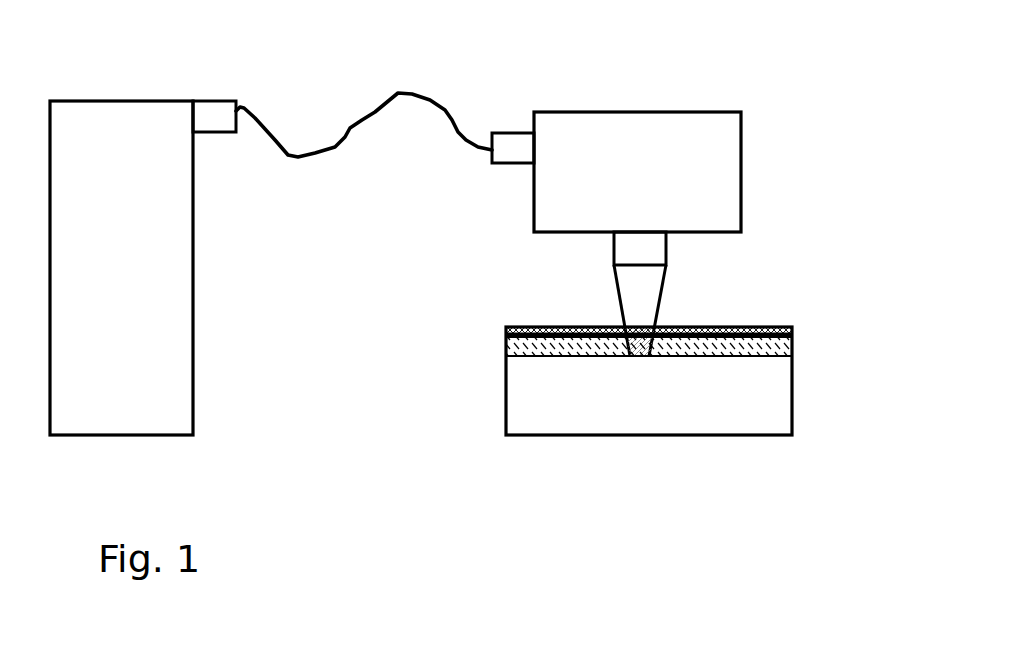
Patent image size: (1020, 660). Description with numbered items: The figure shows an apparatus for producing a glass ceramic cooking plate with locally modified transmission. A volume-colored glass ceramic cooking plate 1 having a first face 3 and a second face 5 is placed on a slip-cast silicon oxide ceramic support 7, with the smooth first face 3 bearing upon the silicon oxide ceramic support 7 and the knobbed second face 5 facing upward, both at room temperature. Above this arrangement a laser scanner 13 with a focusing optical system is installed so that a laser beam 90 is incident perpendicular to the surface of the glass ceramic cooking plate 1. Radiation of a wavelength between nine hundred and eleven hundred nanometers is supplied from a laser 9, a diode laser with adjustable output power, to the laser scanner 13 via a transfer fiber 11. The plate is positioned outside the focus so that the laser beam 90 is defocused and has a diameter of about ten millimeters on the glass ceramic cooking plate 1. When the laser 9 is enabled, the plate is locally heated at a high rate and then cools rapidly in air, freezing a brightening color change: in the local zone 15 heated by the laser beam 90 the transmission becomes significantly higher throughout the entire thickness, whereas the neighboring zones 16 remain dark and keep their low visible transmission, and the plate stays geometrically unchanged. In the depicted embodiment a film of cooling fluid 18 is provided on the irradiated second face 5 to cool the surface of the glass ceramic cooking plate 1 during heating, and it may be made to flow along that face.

The glass ceramic cooking plate 1 is at (506, 342).
The first face 3 is at (540, 358).
The second face 5 is at (542, 330).
The silicon oxide ceramic support 7 is at (792, 398).
The laser 9 is at (125, 435).
The transfer fiber 11 is at (358, 120).
The laser scanner 13 is at (741, 178).
The local zone 15 is at (630, 356).
The neighboring zones 16 is at (690, 345).
The cooling fluid 18 is at (578, 327).
The laser beam 90 is at (662, 300).